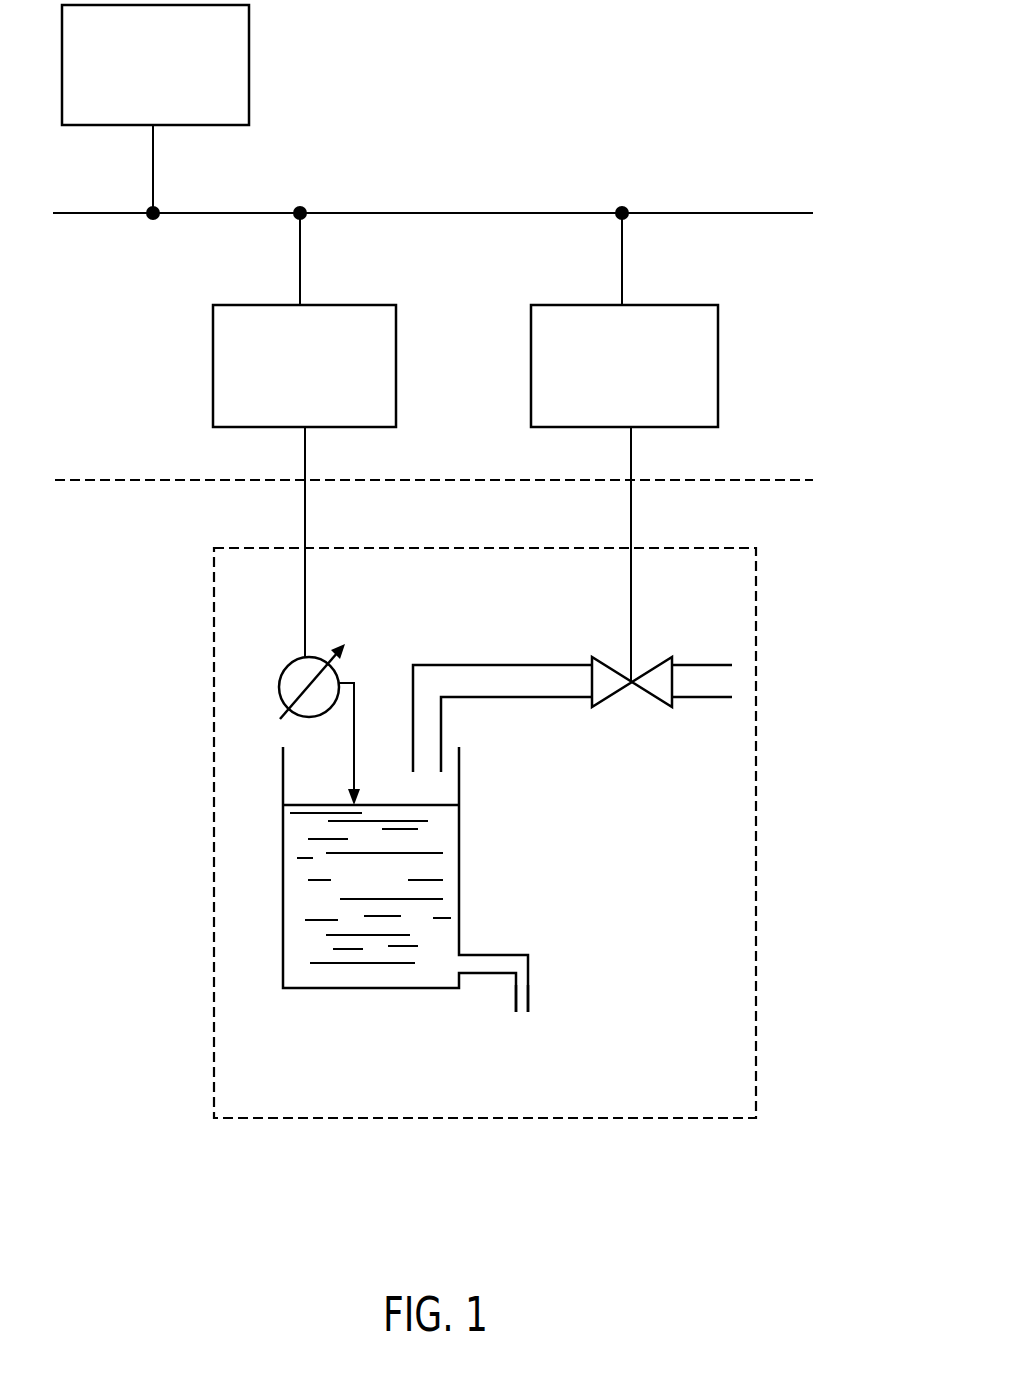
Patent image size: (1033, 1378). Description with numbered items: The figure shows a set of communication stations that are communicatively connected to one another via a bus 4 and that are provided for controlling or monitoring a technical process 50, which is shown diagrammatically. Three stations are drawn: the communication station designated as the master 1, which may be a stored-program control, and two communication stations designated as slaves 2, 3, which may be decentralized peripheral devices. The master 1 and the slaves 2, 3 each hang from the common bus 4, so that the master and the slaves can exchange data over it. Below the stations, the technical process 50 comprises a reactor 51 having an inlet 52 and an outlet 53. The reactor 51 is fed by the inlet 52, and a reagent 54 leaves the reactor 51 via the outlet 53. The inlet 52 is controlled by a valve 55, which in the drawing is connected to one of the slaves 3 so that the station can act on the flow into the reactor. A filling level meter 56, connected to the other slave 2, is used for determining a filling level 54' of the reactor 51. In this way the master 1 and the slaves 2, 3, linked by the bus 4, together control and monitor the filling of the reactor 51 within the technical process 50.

The master 1 is at (250, 62).
The slave 2 is at (396, 371).
The slave 3 is at (718, 371).
The bus 4 is at (727, 213).
The technical process 50 is at (495, 1118).
The reactor 51 is at (377, 990).
The inlet 52 is at (512, 663).
The outlet 53 is at (530, 992).
The reagent 54 is at (399, 888).
The filling level 54' is at (389, 778).
The valve 55 is at (612, 695).
The filling level meter 56 is at (285, 668).